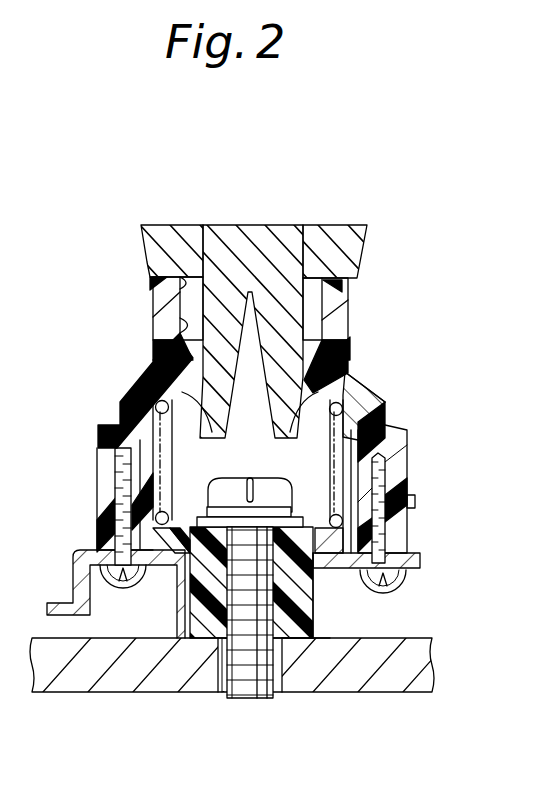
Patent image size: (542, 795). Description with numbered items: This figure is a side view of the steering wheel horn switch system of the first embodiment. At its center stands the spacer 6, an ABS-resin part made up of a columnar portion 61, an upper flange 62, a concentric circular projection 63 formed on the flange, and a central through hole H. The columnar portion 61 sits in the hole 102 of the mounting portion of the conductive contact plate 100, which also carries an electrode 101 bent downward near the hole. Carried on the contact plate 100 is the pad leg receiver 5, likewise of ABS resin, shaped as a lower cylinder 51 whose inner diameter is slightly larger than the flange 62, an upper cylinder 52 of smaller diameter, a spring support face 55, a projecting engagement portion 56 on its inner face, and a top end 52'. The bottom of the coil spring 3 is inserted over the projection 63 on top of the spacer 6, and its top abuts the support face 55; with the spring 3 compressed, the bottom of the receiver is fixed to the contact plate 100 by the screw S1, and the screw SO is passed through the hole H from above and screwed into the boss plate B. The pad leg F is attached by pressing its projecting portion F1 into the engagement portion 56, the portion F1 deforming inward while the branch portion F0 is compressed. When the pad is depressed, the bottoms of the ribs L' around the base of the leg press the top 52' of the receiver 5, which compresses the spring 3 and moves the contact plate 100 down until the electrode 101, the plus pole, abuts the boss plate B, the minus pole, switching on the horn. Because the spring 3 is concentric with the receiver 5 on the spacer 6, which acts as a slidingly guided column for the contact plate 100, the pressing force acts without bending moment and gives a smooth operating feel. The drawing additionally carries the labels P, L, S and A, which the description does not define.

The pressing direction P is at (158, 196).
The lip L is at (311, 328).
The top end 52' is at (208, 274).
The ribs L' is at (226, 308).
The upper cylinder 52 is at (203, 336).
The direction of movement S is at (106, 376).
The axial direction A is at (78, 384).
The projecting portion F1 is at (157, 368).
The lower cylinder 51 is at (138, 468).
The pad leg F is at (292, 298).
The branch portion F0 is at (265, 343).
The projecting engagement portion 56 is at (348, 357).
The spring support face 55 is at (372, 403).
The pad leg receiver 5 is at (383, 418).
The coil spring 3 is at (406, 442).
The concentric circular projection 63 is at (322, 517).
The contact plate 100 is at (420, 553).
The screw S1 is at (113, 587).
The hole 102 is at (187, 583).
The upper flange 62 is at (305, 610).
The spacer 6 is at (331, 614).
The electrode 101 is at (52, 639).
The central through hole H is at (215, 642).
The screw SO is at (274, 672).
The columnar portion 61 is at (320, 639).
The boss plate B is at (392, 682).